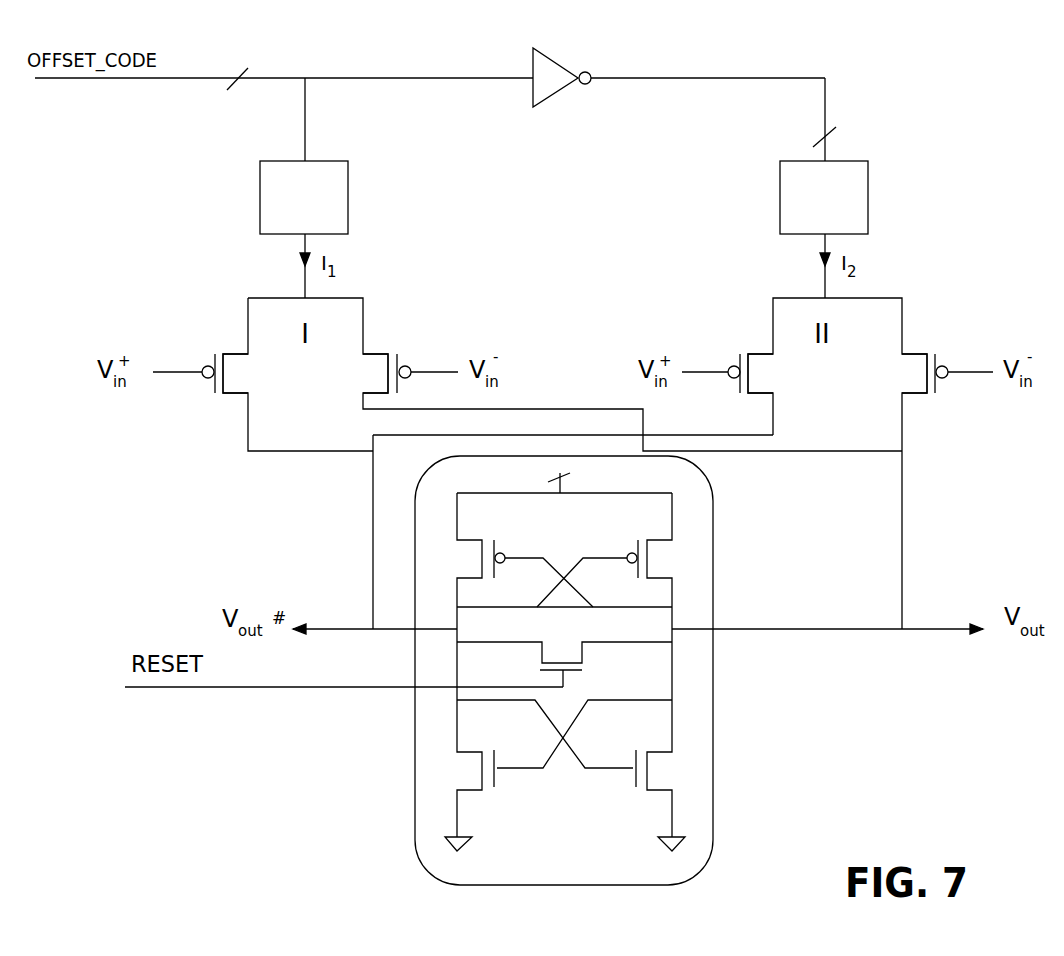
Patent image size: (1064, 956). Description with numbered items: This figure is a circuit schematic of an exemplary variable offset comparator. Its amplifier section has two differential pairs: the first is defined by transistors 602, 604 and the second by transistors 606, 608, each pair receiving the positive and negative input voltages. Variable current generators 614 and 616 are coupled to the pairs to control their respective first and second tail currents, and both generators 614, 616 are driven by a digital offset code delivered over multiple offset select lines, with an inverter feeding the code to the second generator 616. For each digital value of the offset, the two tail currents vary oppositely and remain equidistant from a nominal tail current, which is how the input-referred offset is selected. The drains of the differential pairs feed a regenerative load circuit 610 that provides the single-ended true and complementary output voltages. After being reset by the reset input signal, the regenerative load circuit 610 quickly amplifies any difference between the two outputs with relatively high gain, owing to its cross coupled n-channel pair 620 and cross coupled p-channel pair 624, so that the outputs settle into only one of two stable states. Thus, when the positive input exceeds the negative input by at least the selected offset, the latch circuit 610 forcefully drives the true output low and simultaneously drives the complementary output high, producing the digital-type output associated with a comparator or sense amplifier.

The transistor 602 is at (258, 387).
The transistor 604 is at (362, 387).
The transistor 606 is at (788, 387).
The transistor 608 is at (892, 387).
The regenerative load circuit 610 is at (599, 670).
The variable current generator 614 is at (373, 162).
The variable current generator 616 is at (893, 162).
The cross coupled n-channel pair 620 is at (524, 793).
The cross coupled p-channel pair 624 is at (626, 530).